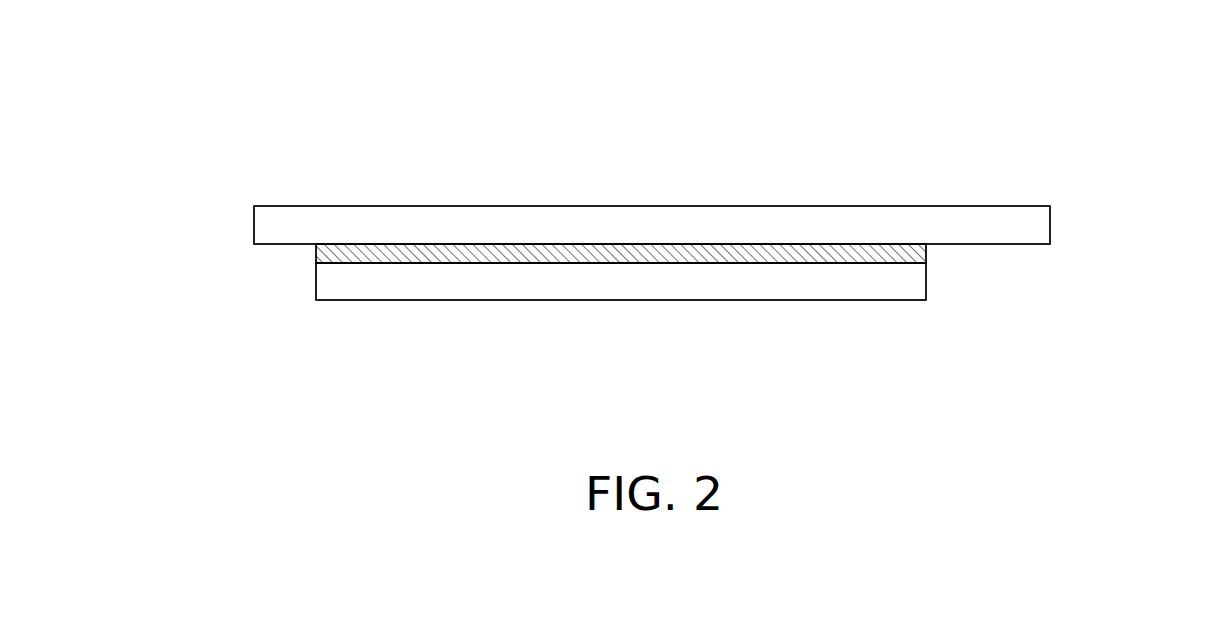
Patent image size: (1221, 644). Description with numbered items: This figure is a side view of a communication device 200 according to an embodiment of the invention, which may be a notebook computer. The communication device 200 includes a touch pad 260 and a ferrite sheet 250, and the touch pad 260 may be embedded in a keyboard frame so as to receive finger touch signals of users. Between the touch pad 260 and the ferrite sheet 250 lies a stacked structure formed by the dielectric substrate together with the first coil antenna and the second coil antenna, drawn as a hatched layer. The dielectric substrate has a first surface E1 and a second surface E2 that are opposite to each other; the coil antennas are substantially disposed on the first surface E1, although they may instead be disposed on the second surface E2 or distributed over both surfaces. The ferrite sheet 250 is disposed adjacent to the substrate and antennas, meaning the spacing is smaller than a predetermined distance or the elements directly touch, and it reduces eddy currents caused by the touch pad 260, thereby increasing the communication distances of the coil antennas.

The communication device 200 is at (192, 72).
The touch pad 260 is at (534, 222).
The ferrite sheet 250 is at (534, 290).
The first surface E1 is at (757, 246).
The second surface E2 is at (757, 263).